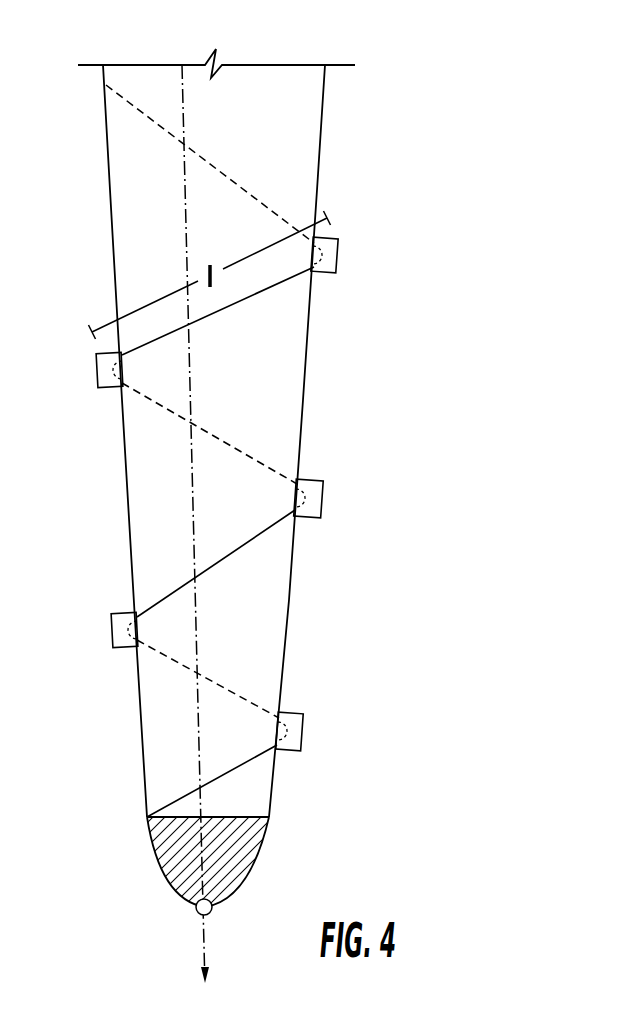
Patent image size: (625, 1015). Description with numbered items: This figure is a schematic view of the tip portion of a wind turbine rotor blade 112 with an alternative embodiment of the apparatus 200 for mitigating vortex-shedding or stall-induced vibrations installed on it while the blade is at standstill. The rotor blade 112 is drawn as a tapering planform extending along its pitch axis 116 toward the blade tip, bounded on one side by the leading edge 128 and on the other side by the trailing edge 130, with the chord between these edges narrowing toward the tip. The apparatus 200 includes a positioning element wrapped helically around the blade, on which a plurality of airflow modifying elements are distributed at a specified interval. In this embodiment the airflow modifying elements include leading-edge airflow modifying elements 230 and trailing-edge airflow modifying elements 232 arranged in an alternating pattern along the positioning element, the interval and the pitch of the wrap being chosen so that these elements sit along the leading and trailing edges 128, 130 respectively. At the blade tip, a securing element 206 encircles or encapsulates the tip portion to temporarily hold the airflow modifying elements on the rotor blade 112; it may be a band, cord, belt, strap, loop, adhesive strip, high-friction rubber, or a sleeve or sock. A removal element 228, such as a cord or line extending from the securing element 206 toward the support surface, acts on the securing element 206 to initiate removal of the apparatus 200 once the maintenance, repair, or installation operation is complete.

The rotor blade 112 is at (302, 93).
The pitch axis 116 is at (182, 108).
The leading edge 128 is at (108, 172).
The trailing edge 130 is at (320, 160).
The apparatus 200 is at (297, 497).
The securing element 206 is at (248, 850).
The removal element 228 is at (200, 947).
The leading-edge airflow modifying element 230 is at (110, 620).
The trailing-edge airflow modifying element 232 is at (297, 727).